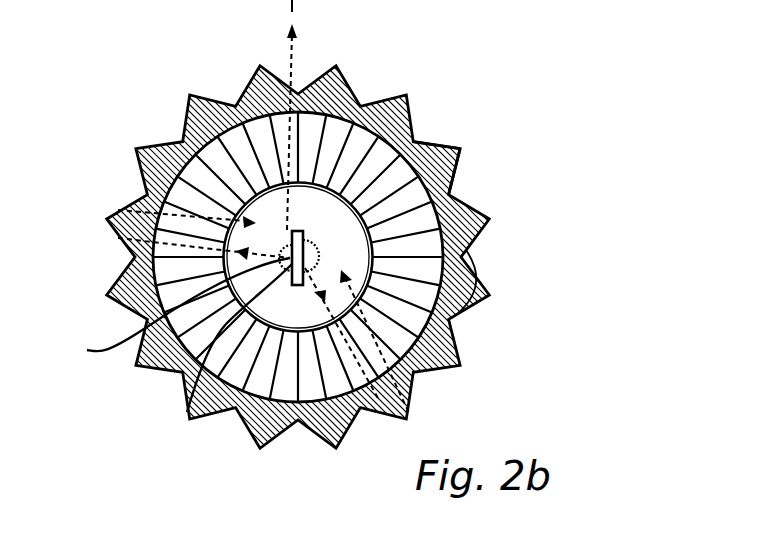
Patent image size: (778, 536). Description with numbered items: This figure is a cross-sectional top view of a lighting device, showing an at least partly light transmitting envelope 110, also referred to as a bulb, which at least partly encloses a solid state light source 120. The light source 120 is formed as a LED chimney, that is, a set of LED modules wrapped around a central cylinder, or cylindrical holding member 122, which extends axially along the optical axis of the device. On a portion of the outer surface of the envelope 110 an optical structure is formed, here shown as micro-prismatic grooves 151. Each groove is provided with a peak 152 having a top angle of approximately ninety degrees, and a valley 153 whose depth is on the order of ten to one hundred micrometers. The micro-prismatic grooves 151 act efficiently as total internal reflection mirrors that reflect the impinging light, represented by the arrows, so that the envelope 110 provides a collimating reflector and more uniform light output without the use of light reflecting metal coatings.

The envelope 110 is at (122, 76).
The solid state light source 120 is at (175, 297).
The cylindrical holding member 122 is at (187, 412).
The micro-prismatic grooves 151 is at (408, 104).
The peak 152 is at (449, 142).
The valley 153 is at (452, 192).